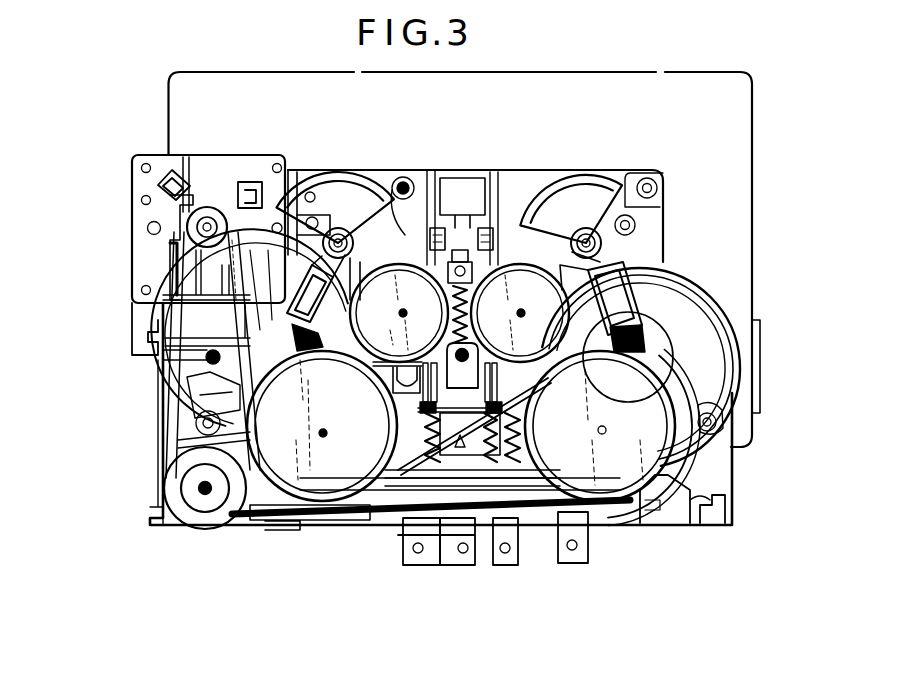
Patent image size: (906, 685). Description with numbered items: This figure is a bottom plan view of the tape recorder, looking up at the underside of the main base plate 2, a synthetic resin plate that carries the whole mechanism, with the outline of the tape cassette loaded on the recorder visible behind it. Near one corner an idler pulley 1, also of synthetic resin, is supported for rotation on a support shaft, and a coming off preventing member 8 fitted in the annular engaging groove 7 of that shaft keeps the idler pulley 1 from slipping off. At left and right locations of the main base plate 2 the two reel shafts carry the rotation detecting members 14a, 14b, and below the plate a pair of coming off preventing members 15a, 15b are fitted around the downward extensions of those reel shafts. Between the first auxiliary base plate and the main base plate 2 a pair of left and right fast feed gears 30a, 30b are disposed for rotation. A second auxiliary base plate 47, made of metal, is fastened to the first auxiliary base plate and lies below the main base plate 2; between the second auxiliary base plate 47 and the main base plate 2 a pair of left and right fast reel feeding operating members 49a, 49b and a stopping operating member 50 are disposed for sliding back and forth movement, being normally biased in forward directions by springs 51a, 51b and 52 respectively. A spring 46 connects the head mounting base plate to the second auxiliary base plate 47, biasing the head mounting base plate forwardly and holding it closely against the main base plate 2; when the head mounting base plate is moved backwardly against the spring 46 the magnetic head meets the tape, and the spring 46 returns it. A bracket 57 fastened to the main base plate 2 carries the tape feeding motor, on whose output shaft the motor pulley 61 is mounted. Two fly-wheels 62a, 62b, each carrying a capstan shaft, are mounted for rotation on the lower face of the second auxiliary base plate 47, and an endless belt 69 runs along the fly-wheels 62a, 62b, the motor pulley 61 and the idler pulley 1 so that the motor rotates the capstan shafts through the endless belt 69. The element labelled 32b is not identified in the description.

The idler pulley 1 is at (178, 469).
The main base plate 2 is at (733, 480).
The annular engaging groove 7 is at (752, 112).
The coming off preventing member 8 is at (210, 510).
The rotation detecting member 14a is at (682, 276).
The rotation detecting member 14b is at (300, 360).
The coming off preventing member 15a is at (586, 236).
The coming off preventing member 15b is at (338, 236).
The fast feed gear 30a is at (512, 265).
The fast feed gear 30b is at (399, 265).
The lever 32b is at (470, 566).
The spring 46 is at (454, 296).
The second auxiliary base plate 47 is at (710, 527).
The fast reel feeding operating member 49a is at (413, 566).
The fast reel feeding operating member 49b is at (506, 566).
The stopping operating member 50 is at (577, 565).
The spring 51a is at (410, 430).
The spring 51b is at (527, 427).
The spring 52 is at (517, 453).
The bracket 57 is at (132, 178).
The motor pulley 61 is at (178, 238).
The fly-wheel 62a is at (656, 527).
The fly-wheel 62b is at (307, 528).
The endless belt 69 is at (362, 527).